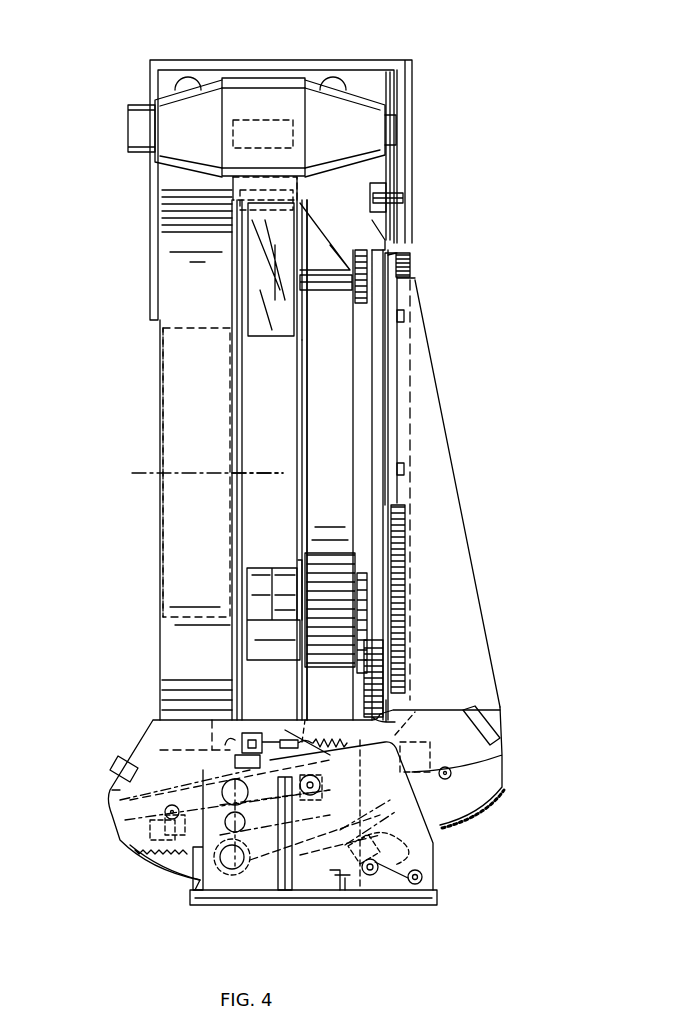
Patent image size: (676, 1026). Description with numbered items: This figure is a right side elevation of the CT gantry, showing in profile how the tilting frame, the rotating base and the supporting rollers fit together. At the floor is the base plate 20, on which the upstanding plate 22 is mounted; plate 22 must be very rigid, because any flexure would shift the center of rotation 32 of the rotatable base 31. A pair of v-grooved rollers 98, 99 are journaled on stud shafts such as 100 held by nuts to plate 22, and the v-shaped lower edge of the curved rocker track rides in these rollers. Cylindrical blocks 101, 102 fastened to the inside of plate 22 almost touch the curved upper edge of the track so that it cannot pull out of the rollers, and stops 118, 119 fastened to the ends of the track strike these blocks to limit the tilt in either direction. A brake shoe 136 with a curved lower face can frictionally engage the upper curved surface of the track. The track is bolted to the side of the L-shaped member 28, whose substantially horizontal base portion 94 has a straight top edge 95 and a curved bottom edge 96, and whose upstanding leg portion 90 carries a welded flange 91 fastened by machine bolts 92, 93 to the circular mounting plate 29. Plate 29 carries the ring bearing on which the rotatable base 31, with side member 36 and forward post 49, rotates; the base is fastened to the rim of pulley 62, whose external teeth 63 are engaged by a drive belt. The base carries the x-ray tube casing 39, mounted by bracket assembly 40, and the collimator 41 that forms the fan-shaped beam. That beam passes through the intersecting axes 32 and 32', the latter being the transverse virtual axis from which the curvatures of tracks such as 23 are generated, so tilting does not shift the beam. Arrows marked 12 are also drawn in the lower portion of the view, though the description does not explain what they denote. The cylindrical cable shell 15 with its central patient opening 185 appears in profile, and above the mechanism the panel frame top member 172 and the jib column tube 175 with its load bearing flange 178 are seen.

The top member 172 is at (330, 58).
The x-ray tube casing 39 is at (346, 143).
The metal tube 175 is at (390, 165).
The load bearing flange 178 is at (395, 192).
The circular mounting plate 29 is at (380, 245).
The cylindrical shell 15 is at (180, 284).
The collimator device 41 is at (276, 340).
The bracket assembly 40 is at (325, 290).
The side member 36 is at (316, 502).
The rotatable base 31 is at (298, 531).
The center of rotation 32 is at (187, 445).
The transverse horizontal line 32' is at (258, 445).
The post 49 is at (255, 650).
The pulley 62 is at (413, 267).
The flange 91 is at (392, 380).
The machine bolt 93 is at (404, 315).
The machine bolt 92 is at (404, 469).
The upstanding leg portion 90 is at (445, 534).
The external teeth 63 is at (403, 593).
The central opening 185 is at (175, 588).
The L-shaped member 28 is at (451, 664).
The brake shoe 136 is at (331, 720).
The base portion 94 is at (152, 743).
The straight top edge 95 is at (198, 718).
The arrow direction 12 is at (333, 822).
The cylindrical block 101 is at (405, 735).
The stop 119 is at (476, 712).
The stop 118 is at (112, 768).
The cylindrical block 102 is at (205, 778).
The curved rocker track 23 is at (100, 800).
The curved bottom edge 96 is at (125, 850).
The roller 98 is at (195, 880).
The stud shaft 100 is at (236, 875).
The upstanding plate 22 is at (436, 840).
The roller 99 is at (450, 823).
The floor base plate 20 is at (430, 895).